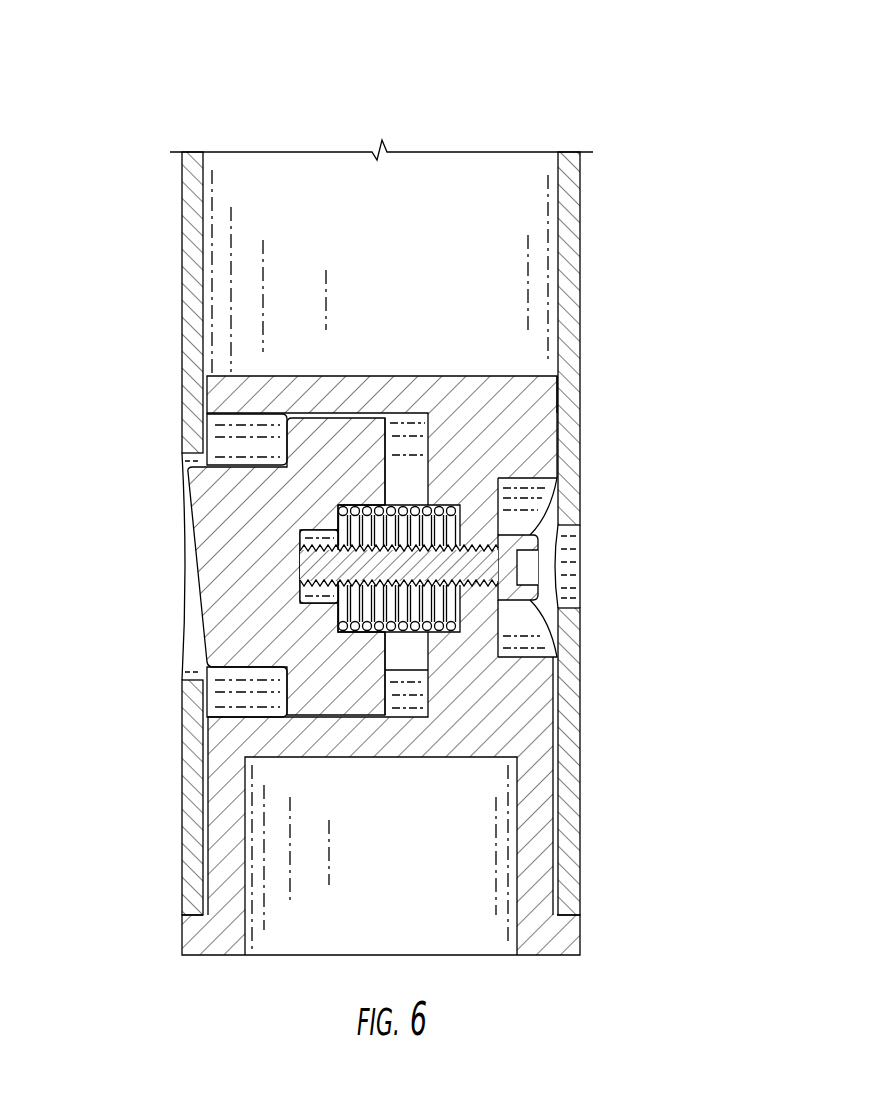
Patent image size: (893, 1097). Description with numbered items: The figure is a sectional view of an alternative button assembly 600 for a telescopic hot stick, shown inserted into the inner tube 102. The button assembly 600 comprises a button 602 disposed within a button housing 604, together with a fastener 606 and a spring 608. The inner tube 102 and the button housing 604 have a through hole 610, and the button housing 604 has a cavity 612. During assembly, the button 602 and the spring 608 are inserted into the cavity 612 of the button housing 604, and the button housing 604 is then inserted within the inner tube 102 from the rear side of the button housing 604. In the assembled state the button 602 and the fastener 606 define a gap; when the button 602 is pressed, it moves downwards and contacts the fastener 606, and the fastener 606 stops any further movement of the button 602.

The button assembly 600 is at (150, 73).
The inner tube 102 is at (192, 283).
The spring 608 is at (367, 510).
The button housing 604 is at (535, 868).
The button 602 is at (122, 585).
The cavity 612 is at (203, 437).
The through hole 610 is at (655, 580).
The fastener 606 is at (532, 567).